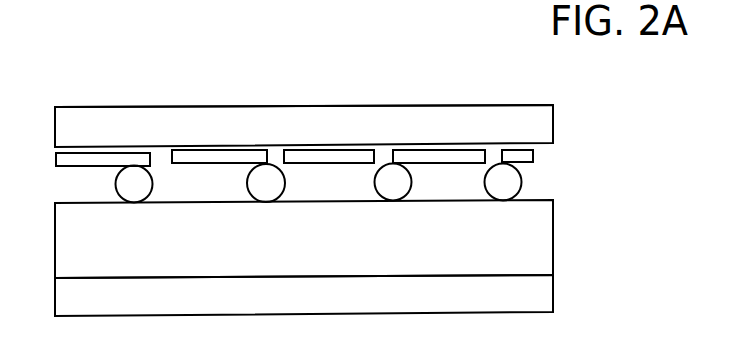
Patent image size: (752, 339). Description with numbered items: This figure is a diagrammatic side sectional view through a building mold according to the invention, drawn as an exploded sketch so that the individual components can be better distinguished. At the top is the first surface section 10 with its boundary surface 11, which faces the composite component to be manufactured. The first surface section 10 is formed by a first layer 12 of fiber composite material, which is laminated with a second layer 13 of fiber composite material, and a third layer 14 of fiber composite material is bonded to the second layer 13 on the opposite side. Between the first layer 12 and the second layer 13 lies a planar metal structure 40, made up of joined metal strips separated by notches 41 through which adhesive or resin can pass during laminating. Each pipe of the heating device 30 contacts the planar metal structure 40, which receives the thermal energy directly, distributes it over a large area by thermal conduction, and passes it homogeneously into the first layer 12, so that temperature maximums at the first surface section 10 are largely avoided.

The first surface section 10 is at (282, 109).
The boundary surface 11 is at (168, 108).
The first layer 12 is at (345, 123).
The second layer 13 is at (543, 233).
The third layer 14 is at (530, 298).
The heating device 30 is at (512, 183).
The planar metal structure 40 is at (523, 157).
The notches 41 is at (383, 155).